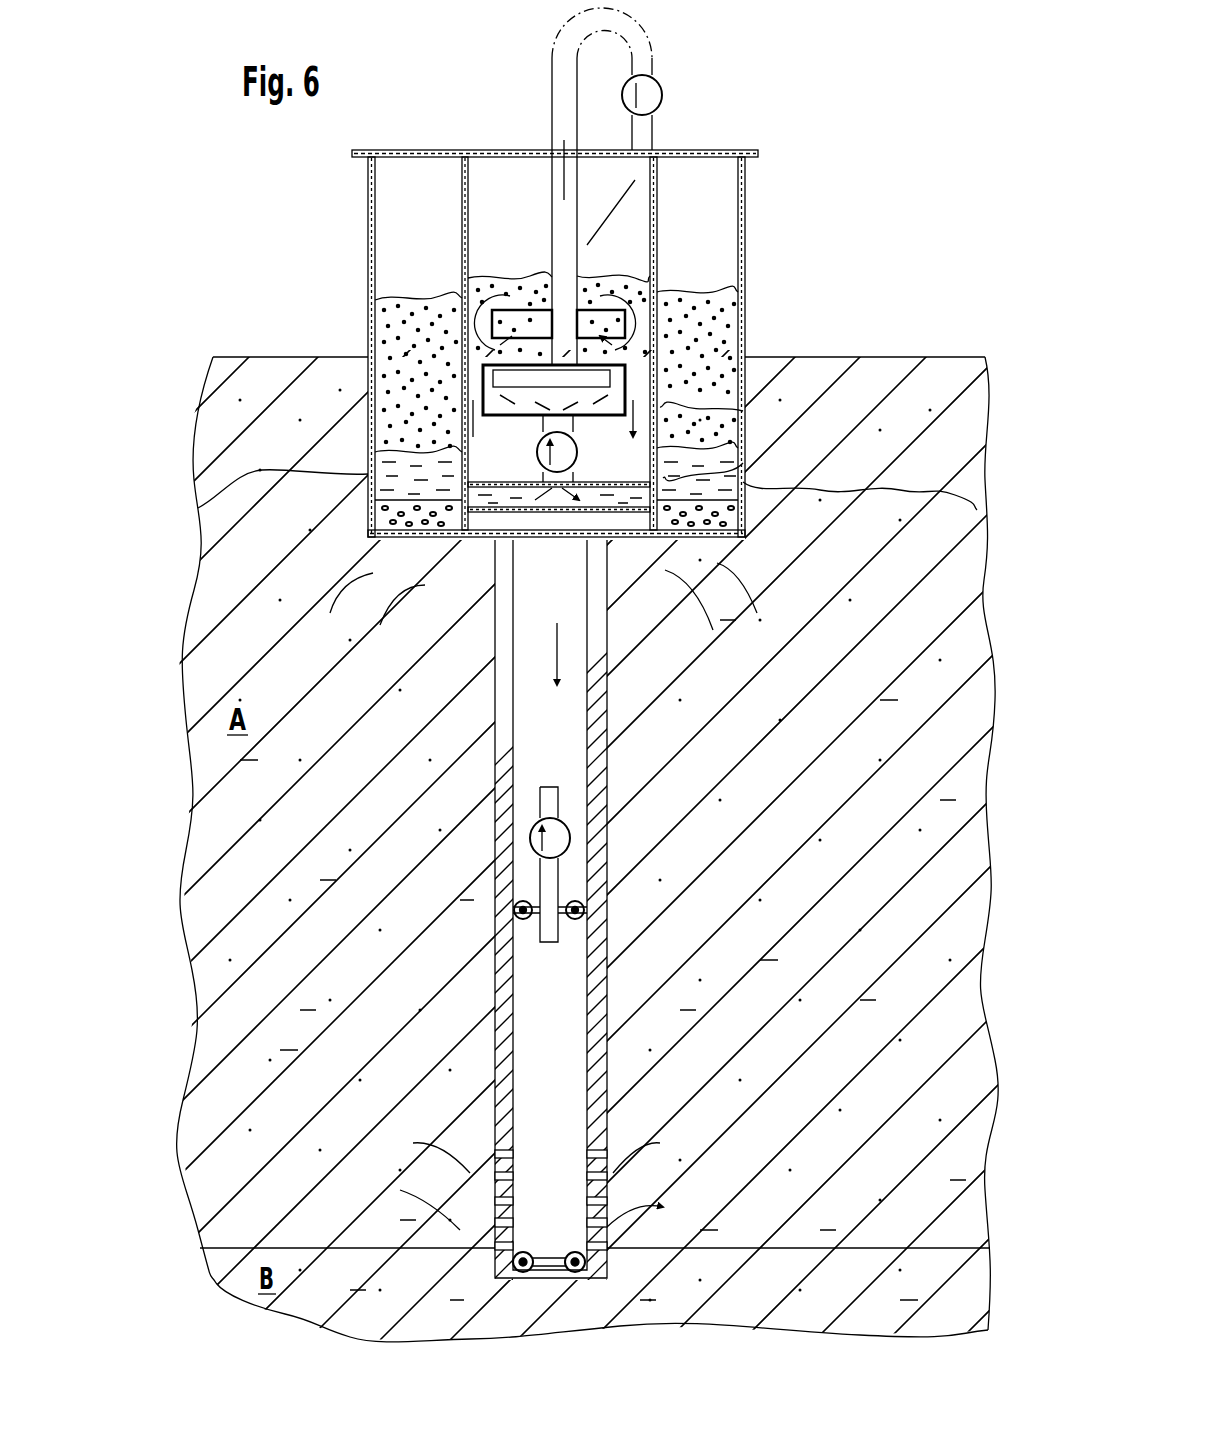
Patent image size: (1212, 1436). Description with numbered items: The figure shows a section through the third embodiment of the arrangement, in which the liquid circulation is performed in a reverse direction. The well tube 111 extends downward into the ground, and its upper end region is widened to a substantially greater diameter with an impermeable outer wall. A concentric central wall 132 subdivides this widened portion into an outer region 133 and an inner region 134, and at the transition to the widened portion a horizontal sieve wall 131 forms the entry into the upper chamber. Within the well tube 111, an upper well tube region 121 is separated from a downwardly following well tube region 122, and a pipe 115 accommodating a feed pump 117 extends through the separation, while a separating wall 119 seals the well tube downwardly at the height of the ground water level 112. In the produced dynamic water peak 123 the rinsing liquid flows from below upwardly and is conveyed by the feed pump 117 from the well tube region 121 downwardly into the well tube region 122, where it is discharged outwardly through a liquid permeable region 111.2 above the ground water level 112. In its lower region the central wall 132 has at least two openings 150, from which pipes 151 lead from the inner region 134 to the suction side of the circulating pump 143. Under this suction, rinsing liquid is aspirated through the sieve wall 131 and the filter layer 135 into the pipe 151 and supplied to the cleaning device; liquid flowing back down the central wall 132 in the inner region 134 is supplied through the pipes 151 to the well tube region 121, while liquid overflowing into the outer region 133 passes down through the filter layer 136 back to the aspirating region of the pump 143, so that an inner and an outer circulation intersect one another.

The well tube 111 is at (607, 716).
The liquid permeable region of the well tube 111.2 is at (600, 1208).
The ground water level 112 is at (788, 1248).
The pipe 115 is at (553, 888).
The feed pump 117 is at (570, 840).
The separating wall 119 is at (543, 1280).
The well tube region 121 is at (552, 637).
The well tube region 122 is at (560, 1038).
The dynamic water peak 123 is at (920, 488).
The sieve wall 131 is at (683, 543).
The central wall 132 is at (743, 411).
The outer region 133 is at (388, 183).
The inner region 134 is at (487, 220).
The filter layer 135 is at (370, 536).
The filter layer 136 is at (380, 333).
The circulating pump 143 is at (577, 450).
The openings 150 is at (743, 463).
The pipes 151 is at (497, 481).